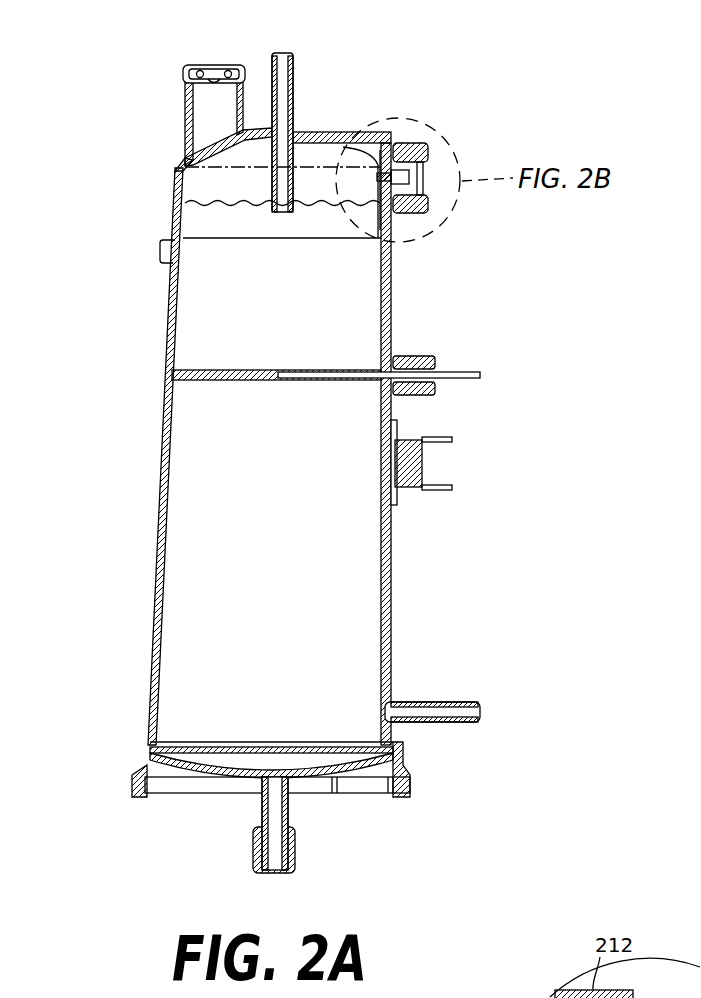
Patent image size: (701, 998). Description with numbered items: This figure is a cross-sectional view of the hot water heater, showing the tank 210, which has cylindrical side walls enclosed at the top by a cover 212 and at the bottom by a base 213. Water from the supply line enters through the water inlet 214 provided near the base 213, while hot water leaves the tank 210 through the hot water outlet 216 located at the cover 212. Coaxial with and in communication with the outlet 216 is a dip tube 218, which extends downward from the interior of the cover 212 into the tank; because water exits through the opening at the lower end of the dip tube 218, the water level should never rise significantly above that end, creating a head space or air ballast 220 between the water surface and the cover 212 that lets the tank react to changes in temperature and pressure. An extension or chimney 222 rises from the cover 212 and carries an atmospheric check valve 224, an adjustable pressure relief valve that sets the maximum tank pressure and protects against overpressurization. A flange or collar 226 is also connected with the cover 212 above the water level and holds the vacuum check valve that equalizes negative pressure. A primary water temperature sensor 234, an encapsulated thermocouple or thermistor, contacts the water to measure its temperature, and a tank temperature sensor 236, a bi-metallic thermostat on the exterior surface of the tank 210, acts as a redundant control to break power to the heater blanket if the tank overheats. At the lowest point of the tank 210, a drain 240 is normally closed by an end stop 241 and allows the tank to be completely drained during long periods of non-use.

The tank 210 is at (160, 488).
The cover 212 is at (345, 132).
The base 213 is at (404, 764).
The water inlet 214 is at (482, 712).
The hot water outlet 216 is at (285, 52).
The dip tube 218 is at (298, 131).
The head space 220 is at (200, 186).
The chimney 222 is at (186, 100).
The atmospheric check valve 224 is at (212, 66).
The collar 226 is at (412, 222).
The primary water temperature sensor 234 is at (482, 375).
The tank temperature sensor 236 is at (422, 466).
The drain 240 is at (288, 810).
The end stop 241 is at (294, 858).